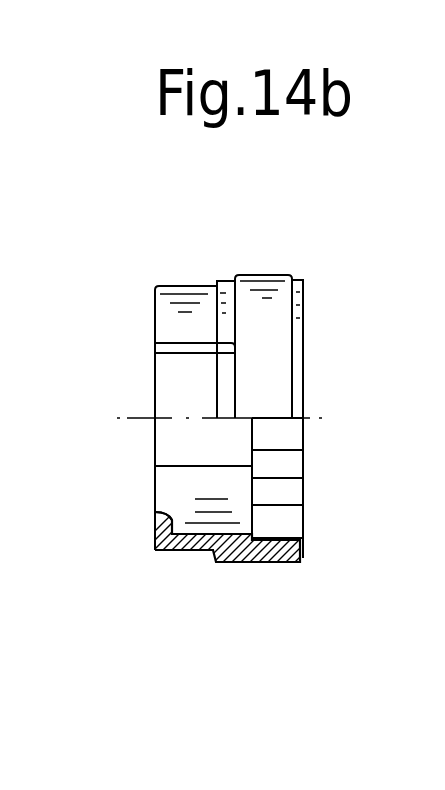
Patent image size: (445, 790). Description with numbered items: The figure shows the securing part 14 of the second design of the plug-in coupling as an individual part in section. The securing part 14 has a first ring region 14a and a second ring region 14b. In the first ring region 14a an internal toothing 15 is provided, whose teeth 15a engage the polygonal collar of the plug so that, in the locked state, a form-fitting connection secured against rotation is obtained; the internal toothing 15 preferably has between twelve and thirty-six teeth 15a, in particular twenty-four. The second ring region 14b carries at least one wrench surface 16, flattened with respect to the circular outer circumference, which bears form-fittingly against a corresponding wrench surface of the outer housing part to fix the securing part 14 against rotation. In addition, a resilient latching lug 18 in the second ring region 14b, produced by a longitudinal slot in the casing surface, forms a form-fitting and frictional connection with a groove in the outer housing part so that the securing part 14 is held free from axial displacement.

The securing part 14 is at (247, 495).
The first ring region 14a is at (278, 563).
The second ring region 14b is at (192, 552).
The internal toothing 15 is at (293, 488).
The teeth 15a is at (305, 436).
The wrench surface 16 is at (176, 446).
The latching lug 18 is at (153, 515).